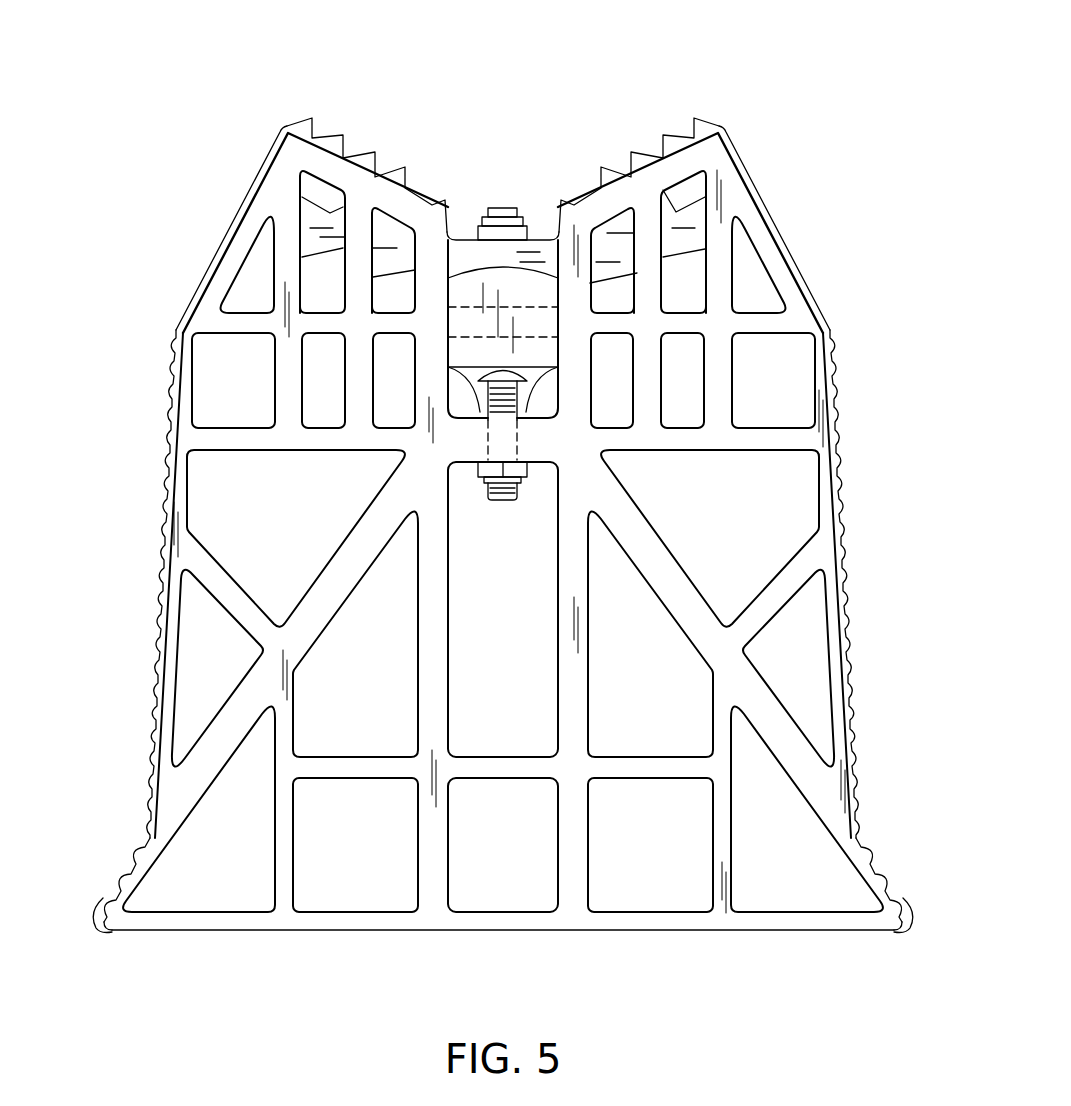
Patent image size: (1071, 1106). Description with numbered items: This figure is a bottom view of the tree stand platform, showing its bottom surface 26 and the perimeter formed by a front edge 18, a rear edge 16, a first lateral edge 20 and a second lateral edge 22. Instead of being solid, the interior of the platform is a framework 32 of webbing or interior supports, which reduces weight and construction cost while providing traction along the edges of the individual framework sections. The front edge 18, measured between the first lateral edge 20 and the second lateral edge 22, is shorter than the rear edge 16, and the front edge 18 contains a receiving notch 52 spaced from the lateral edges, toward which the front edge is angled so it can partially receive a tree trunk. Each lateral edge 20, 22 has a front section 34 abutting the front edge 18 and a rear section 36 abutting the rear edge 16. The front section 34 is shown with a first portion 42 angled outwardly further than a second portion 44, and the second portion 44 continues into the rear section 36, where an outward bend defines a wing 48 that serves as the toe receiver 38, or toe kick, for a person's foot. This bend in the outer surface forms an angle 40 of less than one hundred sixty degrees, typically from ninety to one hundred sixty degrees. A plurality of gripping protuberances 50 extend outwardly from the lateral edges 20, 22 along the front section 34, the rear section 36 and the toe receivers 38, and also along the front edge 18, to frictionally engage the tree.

The rear edge 16 is at (648, 931).
The front edge 18 is at (594, 204).
The first lateral edge 20 is at (150, 707).
The second lateral edge 22 is at (843, 522).
The bottom surface 26 is at (772, 320).
The framework 32 is at (240, 661).
The front section 34 is at (872, 305).
The rear section 36 is at (868, 692).
The toe receiver 38 is at (84, 888).
The angle 40 is at (115, 871).
The first portion 42 is at (237, 213).
The second portion 44 is at (168, 398).
The wing 48 is at (100, 931).
The gripping protuberances 50 is at (342, 136).
The receiving notch 52 is at (557, 297).